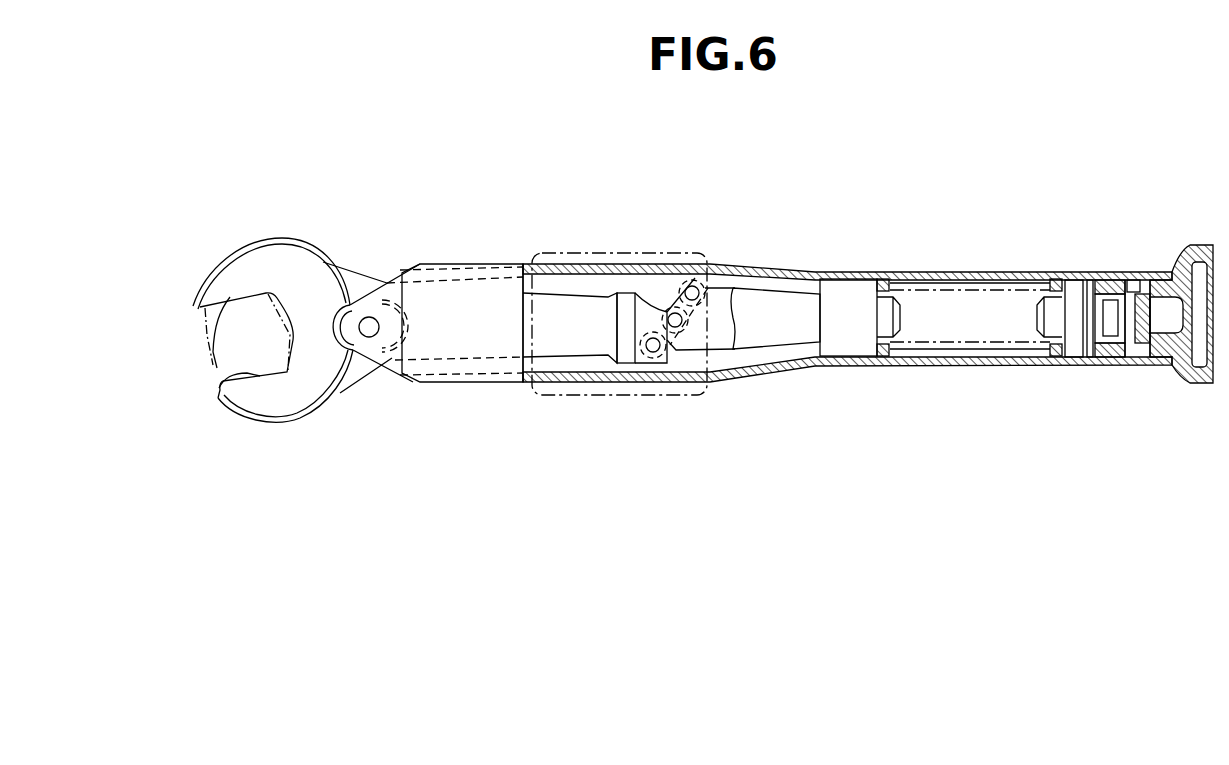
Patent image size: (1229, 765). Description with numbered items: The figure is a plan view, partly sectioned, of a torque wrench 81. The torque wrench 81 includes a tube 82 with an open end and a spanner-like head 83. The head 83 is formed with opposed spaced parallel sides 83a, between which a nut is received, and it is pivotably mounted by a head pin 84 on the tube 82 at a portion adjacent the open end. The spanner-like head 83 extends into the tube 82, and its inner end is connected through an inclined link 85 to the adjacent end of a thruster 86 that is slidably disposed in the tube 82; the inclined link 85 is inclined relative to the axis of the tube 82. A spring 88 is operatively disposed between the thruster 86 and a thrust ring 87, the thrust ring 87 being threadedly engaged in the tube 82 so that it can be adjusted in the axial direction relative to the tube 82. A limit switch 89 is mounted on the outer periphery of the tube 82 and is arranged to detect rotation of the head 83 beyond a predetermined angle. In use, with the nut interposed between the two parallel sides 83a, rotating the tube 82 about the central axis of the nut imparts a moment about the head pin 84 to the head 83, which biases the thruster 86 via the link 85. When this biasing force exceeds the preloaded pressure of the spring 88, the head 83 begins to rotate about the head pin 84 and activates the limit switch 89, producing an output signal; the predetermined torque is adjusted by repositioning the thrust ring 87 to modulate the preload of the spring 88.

The torque wrench 81 is at (777, 380).
The tube 82 is at (462, 263).
The spanner-like head 83 is at (303, 239).
The opposed spaced parallel sides 83a is at (228, 373).
The head pin 84 is at (370, 337).
The inclined link 85 is at (672, 352).
The thruster 86 is at (788, 289).
The thrust ring 87 is at (1128, 332).
The spring 88 is at (885, 280).
The limit switch 89 is at (590, 401).